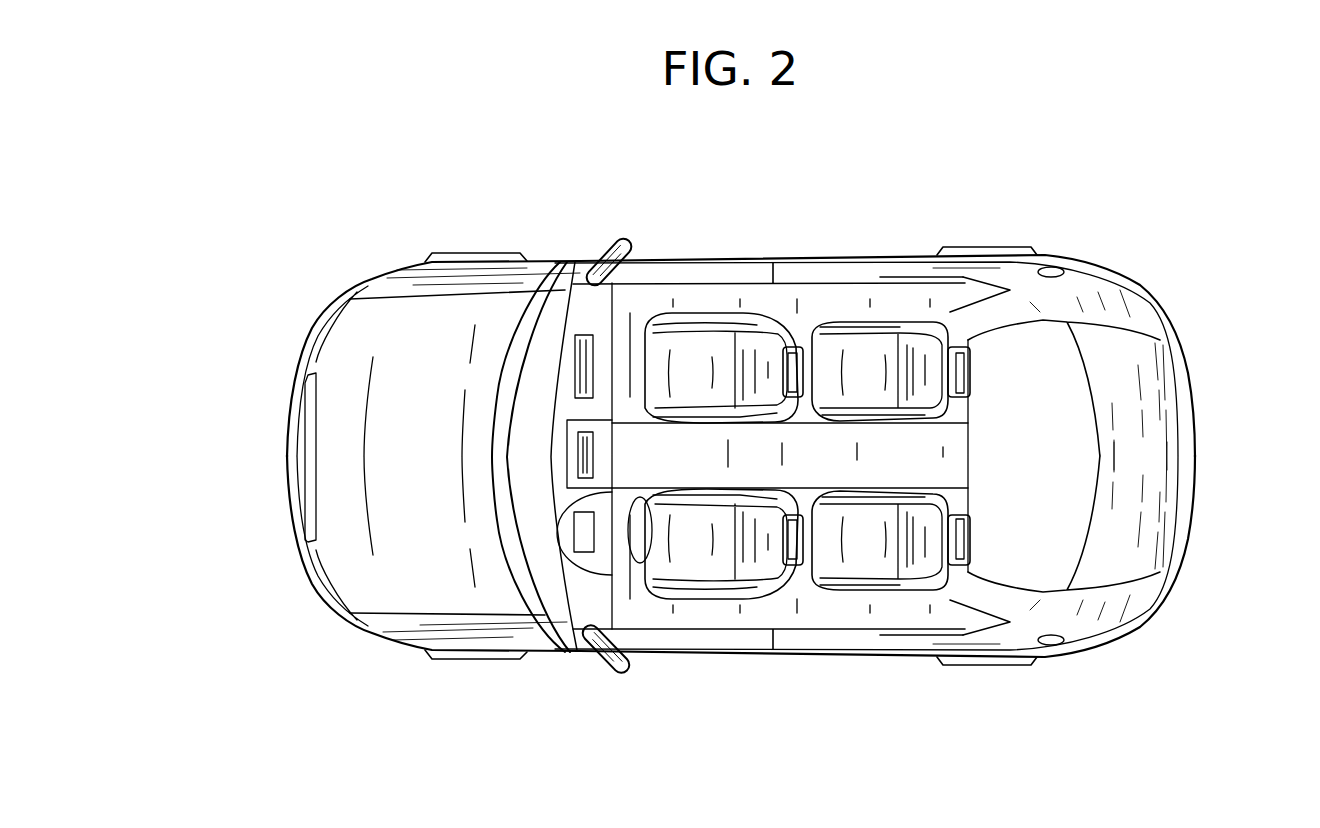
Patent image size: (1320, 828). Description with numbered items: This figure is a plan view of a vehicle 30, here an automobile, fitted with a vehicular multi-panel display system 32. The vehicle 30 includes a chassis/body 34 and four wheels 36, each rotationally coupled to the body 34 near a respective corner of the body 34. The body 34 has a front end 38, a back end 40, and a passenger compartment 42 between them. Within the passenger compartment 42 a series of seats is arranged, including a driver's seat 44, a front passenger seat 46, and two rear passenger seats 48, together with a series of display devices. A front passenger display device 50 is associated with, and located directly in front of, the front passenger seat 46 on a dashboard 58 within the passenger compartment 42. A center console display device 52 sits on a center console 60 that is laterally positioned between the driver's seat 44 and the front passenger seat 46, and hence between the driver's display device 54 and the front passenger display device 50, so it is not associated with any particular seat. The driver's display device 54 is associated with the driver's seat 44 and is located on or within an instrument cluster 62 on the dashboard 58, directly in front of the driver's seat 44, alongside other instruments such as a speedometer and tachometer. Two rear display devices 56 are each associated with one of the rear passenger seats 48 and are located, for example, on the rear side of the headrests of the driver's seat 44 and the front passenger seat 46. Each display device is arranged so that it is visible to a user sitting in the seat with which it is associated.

The vehicle 30 is at (215, 205).
The vehicular multi-panel display system 32 is at (525, 340).
The chassis/body 34 is at (357, 588).
The wheels 36 is at (450, 252).
The front end 38 is at (245, 410).
The back end 40 is at (1222, 408).
The passenger compartment 42 is at (558, 160).
The driver's seat 44 is at (697, 583).
The front passenger seat 46 is at (698, 350).
The rear passenger seats 48 is at (876, 353).
The front passenger display device 50 is at (574, 334).
The center console display device 52 is at (578, 452).
The driver's display device 54 is at (573, 532).
The rear display devices 56 is at (798, 345).
The dashboard 58 is at (600, 308).
The center console 60 is at (632, 453).
The instrument cluster 62 is at (587, 637).